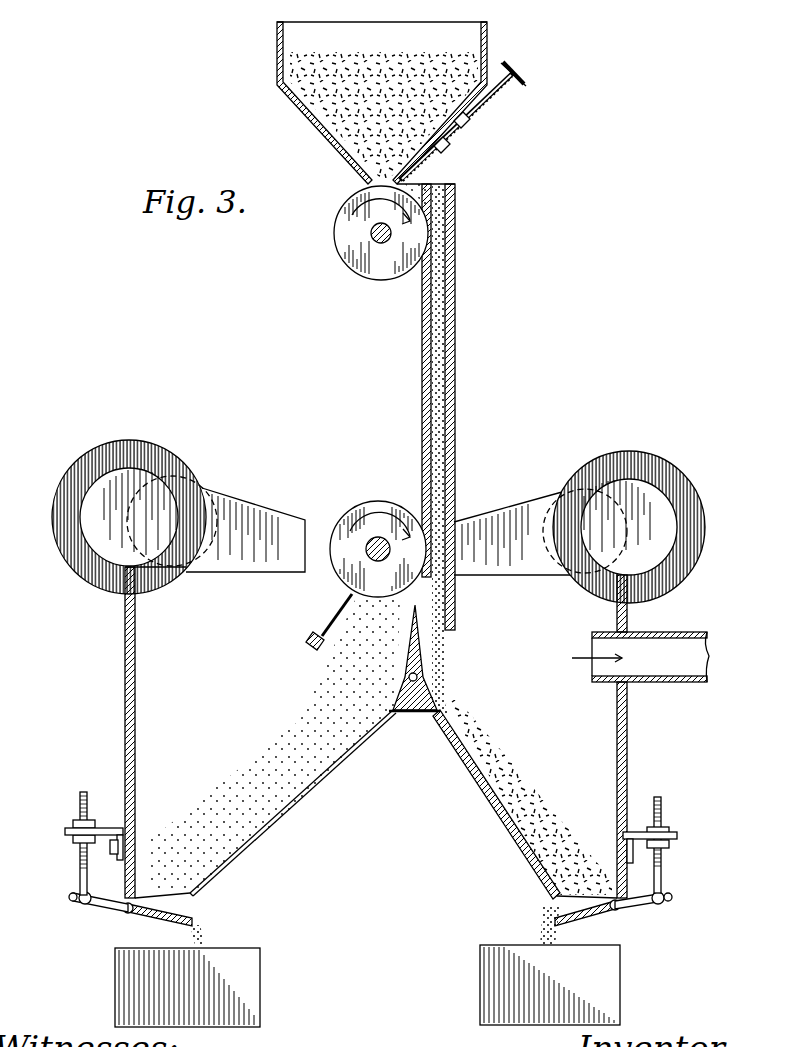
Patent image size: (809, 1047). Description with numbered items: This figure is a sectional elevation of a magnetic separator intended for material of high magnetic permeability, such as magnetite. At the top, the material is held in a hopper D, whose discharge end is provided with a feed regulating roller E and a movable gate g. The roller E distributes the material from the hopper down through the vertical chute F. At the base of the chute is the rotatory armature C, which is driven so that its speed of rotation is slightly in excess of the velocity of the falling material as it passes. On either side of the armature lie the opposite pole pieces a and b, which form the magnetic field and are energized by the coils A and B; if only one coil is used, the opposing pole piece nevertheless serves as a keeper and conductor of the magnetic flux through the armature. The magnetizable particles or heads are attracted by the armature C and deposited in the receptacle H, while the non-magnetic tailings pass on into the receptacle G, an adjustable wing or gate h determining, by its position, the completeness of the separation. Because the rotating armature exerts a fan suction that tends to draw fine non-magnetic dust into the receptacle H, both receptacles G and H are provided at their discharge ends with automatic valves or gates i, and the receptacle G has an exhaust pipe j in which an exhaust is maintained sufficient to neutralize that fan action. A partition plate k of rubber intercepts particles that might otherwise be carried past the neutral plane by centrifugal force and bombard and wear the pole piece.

The hopper D is at (276, 58).
The movable gate g is at (418, 165).
The vertical chute F is at (440, 452).
The feed regulating roller E is at (333, 222).
The coil A is at (117, 517).
The pole piece a is at (245, 530).
The coil B is at (703, 530).
The pole piece b is at (512, 533).
The rotatory armature C is at (350, 500).
The partition plate k is at (336, 602).
The adjustable wing or gate h is at (394, 713).
The receptacle H is at (262, 732).
The receptacle G is at (530, 737).
The exhaust pipe j is at (640, 657).
The automatic valves or gates i is at (136, 916).